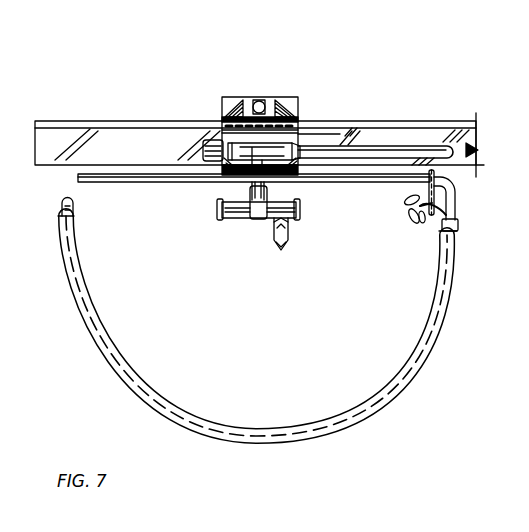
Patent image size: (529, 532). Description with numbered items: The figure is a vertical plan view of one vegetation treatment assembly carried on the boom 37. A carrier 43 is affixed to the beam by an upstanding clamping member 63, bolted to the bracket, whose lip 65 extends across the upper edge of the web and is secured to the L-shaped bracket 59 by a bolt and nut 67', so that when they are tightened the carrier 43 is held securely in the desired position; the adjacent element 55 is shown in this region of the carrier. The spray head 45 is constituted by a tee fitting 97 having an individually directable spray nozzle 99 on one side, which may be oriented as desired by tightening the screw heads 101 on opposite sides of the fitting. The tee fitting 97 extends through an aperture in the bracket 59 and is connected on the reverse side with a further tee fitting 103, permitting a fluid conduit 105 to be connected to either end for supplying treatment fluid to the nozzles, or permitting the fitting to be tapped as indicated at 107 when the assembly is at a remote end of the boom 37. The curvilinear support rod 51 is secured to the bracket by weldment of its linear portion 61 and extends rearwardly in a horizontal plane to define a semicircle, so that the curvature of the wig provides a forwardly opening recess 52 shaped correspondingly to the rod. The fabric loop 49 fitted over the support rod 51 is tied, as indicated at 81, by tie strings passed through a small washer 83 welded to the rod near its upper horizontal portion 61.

The boom 37 is at (433, 124).
The fluid conduit 105 is at (396, 146).
The linear portion 61 is at (176, 173).
The carrier 43 is at (303, 108).
The further tee fitting 103 is at (298, 100).
The guide 55 is at (305, 133).
The lip 65 is at (234, 115).
The clamping member 63 is at (248, 110).
The nut 67' is at (281, 80).
The tap 107 is at (208, 141).
The L-shaped bracket 59 is at (226, 183).
The spray head 45 is at (247, 254).
The tee fitting 97 is at (258, 220).
The screw heads 101 is at (302, 211).
The spray nozzle 99 is at (290, 240).
The recess 52 is at (252, 317).
The fabric loop 49 is at (112, 347).
The washer 83 is at (431, 203).
The support rod 51 is at (450, 195).
The tie 81 is at (413, 226).